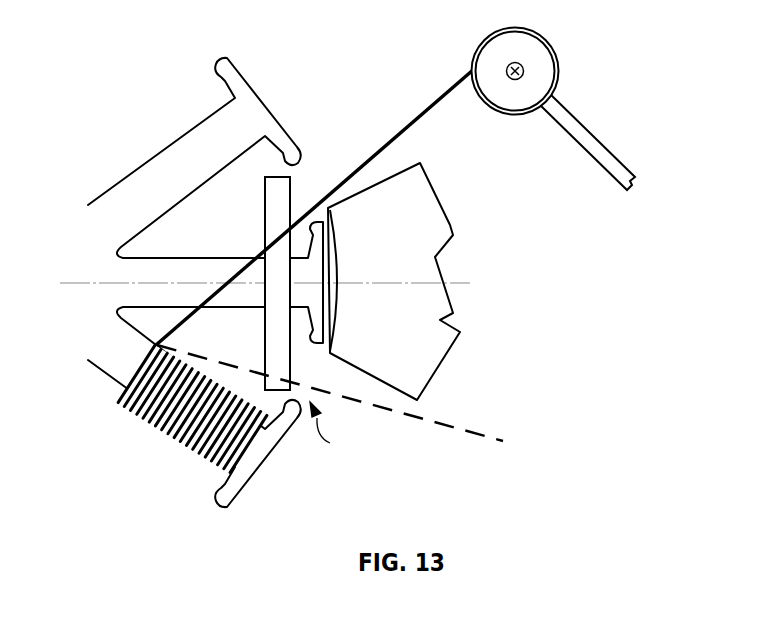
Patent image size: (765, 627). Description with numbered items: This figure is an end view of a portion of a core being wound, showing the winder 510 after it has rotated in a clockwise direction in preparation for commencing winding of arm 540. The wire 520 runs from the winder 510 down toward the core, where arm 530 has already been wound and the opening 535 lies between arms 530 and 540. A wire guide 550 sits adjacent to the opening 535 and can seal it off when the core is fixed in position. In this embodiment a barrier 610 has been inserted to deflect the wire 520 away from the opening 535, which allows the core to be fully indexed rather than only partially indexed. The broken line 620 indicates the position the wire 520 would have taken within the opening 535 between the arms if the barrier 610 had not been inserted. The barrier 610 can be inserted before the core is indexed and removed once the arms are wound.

The winder 510 is at (577, 147).
The wire 520 is at (427, 115).
The arm 530 is at (230, 471).
The opening 535 is at (329, 437).
The arm 540 is at (178, 257).
The wire guide 550 is at (450, 225).
The barrier 610 is at (257, 369).
The broken line 620 is at (343, 401).